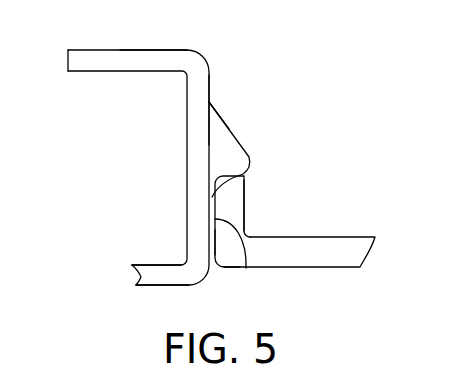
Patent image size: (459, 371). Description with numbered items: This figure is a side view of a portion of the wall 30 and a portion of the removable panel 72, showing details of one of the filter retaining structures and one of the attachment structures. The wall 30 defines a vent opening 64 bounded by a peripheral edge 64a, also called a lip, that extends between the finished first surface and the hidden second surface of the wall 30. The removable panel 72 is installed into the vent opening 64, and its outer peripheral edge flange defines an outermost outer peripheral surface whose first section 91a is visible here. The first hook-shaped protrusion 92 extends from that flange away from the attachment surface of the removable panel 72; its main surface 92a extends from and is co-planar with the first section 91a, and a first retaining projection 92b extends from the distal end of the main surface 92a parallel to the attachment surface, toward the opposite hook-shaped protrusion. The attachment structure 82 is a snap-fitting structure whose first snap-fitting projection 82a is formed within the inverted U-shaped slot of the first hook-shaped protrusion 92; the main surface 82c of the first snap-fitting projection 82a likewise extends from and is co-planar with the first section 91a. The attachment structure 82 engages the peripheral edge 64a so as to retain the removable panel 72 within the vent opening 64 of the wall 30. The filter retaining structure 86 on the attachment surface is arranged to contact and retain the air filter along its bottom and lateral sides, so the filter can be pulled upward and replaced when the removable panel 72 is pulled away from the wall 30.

The wall 30 is at (313, 252).
The vent opening 64 is at (215, 243).
The peripheral edge 64a is at (233, 204).
The removable panel 72 is at (160, 278).
The attachment structure 82 is at (224, 158).
The first snap-fitting projection 82a is at (218, 116).
The main surface 82c is at (246, 268).
The filter retaining structure 86 is at (109, 60).
The first section 91a is at (211, 262).
The first hook-shaped protrusion 92 is at (210, 90).
The main surface 92a is at (209, 131).
The first retaining projection 92b is at (139, 50).